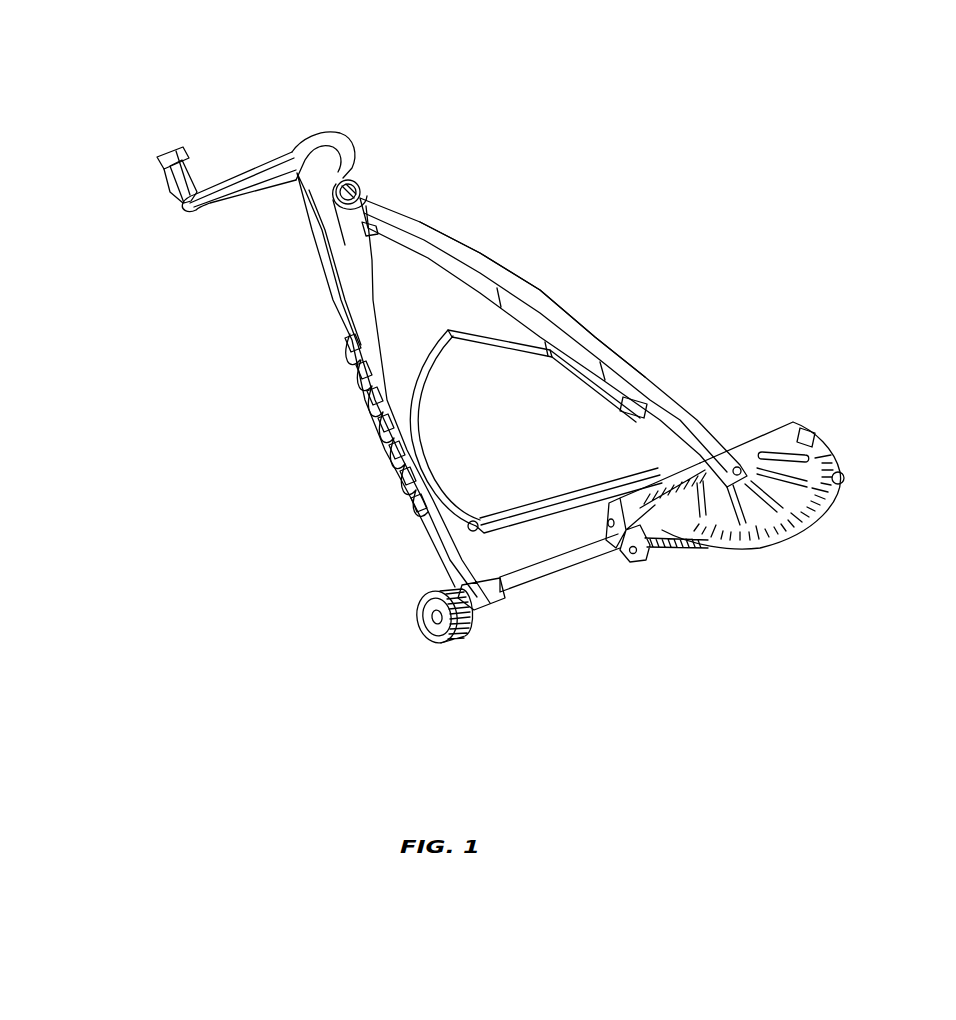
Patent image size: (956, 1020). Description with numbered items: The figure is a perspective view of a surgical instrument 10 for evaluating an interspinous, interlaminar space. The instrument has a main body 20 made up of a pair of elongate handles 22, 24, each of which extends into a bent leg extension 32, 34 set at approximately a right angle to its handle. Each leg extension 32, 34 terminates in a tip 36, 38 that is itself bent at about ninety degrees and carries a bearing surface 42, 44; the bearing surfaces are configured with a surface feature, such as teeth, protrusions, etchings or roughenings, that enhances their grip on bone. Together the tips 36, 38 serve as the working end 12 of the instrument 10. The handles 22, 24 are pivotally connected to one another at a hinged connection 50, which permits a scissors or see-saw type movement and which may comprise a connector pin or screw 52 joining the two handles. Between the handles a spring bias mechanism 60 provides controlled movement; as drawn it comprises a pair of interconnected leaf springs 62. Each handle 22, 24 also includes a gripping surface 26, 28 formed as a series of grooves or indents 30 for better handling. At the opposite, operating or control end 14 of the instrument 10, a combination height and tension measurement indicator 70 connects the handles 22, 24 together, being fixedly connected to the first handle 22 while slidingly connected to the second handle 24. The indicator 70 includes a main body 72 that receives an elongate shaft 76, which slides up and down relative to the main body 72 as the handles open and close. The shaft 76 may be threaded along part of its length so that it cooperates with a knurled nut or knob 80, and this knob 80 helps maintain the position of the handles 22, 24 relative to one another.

The surgical instrument 10 is at (565, 82).
The working end 12 is at (104, 59).
The operating or control end 14 is at (644, 719).
The main body 20 is at (249, 297).
The first handle 22 is at (424, 219).
The second handle 24 is at (333, 298).
The gripping surface 26 is at (596, 339).
The gripping surface 28 is at (376, 428).
The grooves or indents 30 is at (360, 386).
The leg extension 32 is at (305, 147).
The leg extension 34 is at (220, 196).
The tip 36 is at (177, 152).
The tip 38 is at (155, 160).
The bearing surface 42 is at (184, 165).
The bearing surface 44 is at (166, 176).
The hinged connection 50 is at (372, 172).
The connector pin or screw 52 is at (358, 190).
The spring bias mechanism 60 is at (490, 383).
The leaf springs 62 is at (431, 368).
The combination height and tension measurement indicator 70 is at (771, 619).
The main body of the indicator 72 is at (794, 428).
The elongate shaft 76 is at (553, 568).
The knurled nut or knob 80 is at (440, 642).